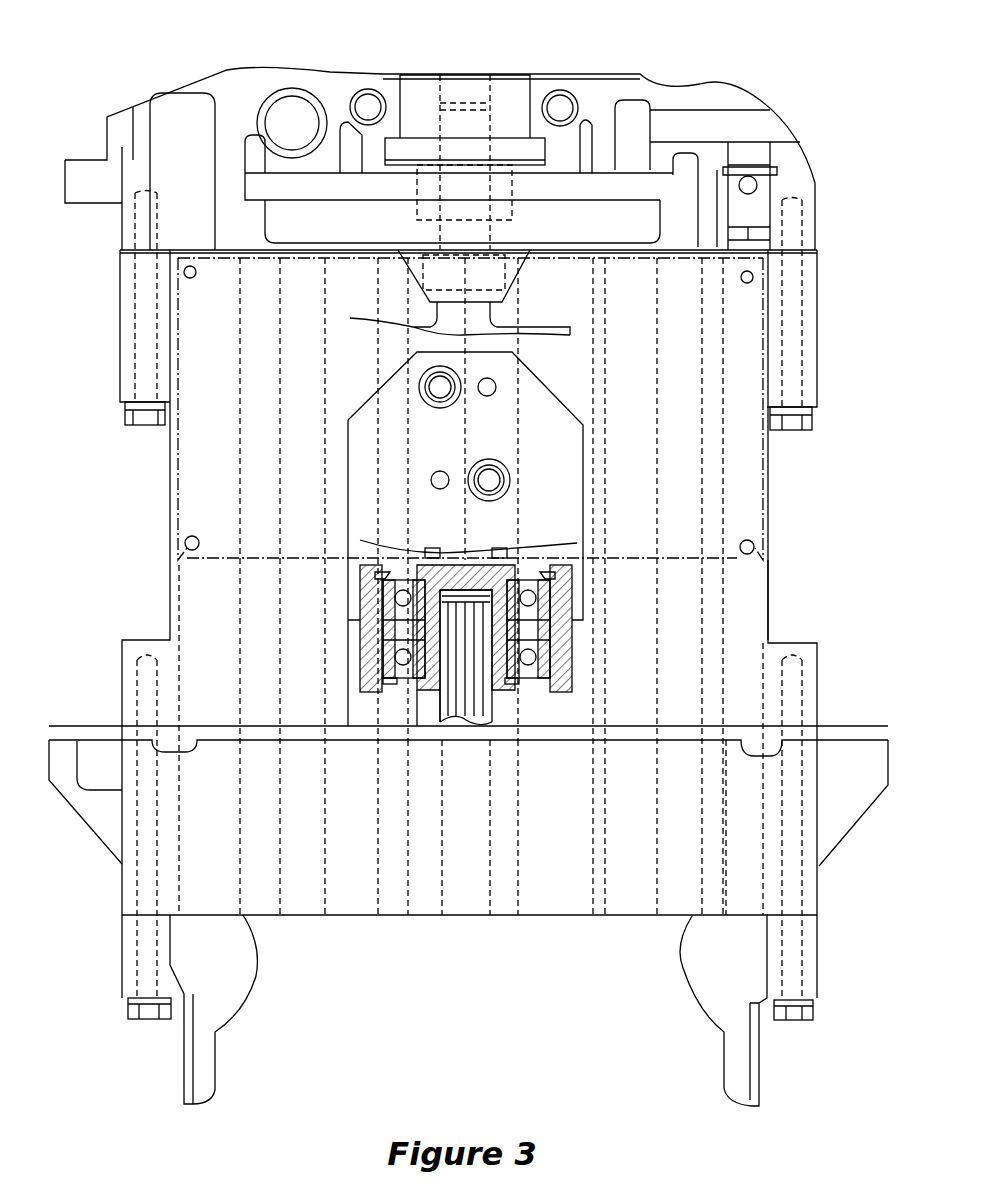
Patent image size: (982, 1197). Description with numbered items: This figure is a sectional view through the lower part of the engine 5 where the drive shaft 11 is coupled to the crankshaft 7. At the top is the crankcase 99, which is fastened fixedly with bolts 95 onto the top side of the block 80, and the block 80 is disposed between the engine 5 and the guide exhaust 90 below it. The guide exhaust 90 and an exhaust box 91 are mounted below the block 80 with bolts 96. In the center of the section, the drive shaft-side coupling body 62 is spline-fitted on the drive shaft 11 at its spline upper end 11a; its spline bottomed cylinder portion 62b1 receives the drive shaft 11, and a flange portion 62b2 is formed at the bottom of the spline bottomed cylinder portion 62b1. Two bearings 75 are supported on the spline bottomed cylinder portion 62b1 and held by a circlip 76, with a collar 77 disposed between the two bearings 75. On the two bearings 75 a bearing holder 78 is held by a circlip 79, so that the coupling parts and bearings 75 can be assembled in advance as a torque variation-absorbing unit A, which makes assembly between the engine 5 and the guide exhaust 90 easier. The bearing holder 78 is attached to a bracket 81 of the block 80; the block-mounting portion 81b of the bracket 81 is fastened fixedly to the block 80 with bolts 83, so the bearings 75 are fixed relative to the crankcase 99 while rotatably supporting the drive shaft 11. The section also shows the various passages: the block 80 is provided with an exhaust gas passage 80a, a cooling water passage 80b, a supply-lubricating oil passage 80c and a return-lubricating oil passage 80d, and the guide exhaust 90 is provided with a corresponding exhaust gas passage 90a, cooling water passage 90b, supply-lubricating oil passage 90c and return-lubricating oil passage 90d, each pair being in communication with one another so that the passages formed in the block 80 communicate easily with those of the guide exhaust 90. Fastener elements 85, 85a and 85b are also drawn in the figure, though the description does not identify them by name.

The engine 5 is at (118, 91).
The crankshaft 7 is at (506, 95).
The drive shaft 11 is at (460, 897).
The spline upper end 11a is at (477, 710).
The drive shaft-side coupling body 62 is at (395, 545).
The spline bottomed cylinder portion 62b1 is at (415, 700).
The flange portion 62b2 is at (450, 567).
The bearings 75 is at (383, 598).
The circlip 76 is at (507, 684).
The collar 77 is at (537, 627).
The bearing holder 78 is at (565, 664).
The circlip 79 is at (548, 570).
The block 80 is at (165, 500).
The exhaust gas passage 80a is at (770, 590).
The cooling water passage 80b is at (512, 412).
The supply-lubricating oil passage 80c is at (240, 615).
The return-lubricating oil passage 80d is at (178, 575).
The bracket 81 is at (343, 438).
The block-mounting portion 81b is at (360, 480).
The bolts 83 is at (420, 390).
The fastening bolt 85 is at (188, 447).
The bolt head 85a is at (773, 247).
The nut 85b is at (753, 393).
The guide exhaust 90 is at (94, 752).
The exhaust gas passage 90a is at (763, 907).
The cooling water passage 90b is at (412, 897).
The supply-lubricating oil passage 90c is at (281, 882).
The return-lubricating oil passage 90d is at (180, 884).
The exhaust box 91 is at (189, 1060).
The bolts 95 is at (137, 372).
The bolts 96 is at (141, 896).
The crankcase 99 is at (213, 82).
The torque variation-absorbing unit A is at (467, 730).